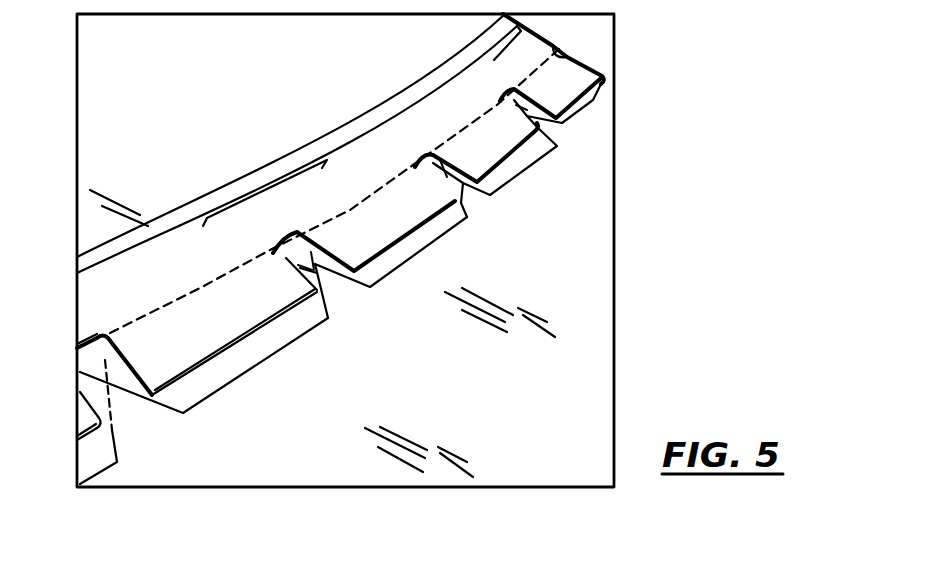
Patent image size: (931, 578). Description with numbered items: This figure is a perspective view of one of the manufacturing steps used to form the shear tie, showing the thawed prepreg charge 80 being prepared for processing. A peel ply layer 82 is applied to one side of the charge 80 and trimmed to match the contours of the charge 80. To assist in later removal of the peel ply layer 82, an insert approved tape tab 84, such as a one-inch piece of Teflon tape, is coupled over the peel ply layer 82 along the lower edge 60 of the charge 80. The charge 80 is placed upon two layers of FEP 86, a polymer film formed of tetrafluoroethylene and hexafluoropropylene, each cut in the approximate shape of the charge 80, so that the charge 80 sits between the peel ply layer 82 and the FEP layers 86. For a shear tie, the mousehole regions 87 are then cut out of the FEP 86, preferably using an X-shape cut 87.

The lower edge 60 is at (173, 229).
The charge 80 is at (347, 158).
The peel ply layer 82 is at (223, 240).
The tape tab 84 is at (262, 192).
The FEP layers 86 is at (213, 380).
The mousehole regions 87 is at (330, 300).